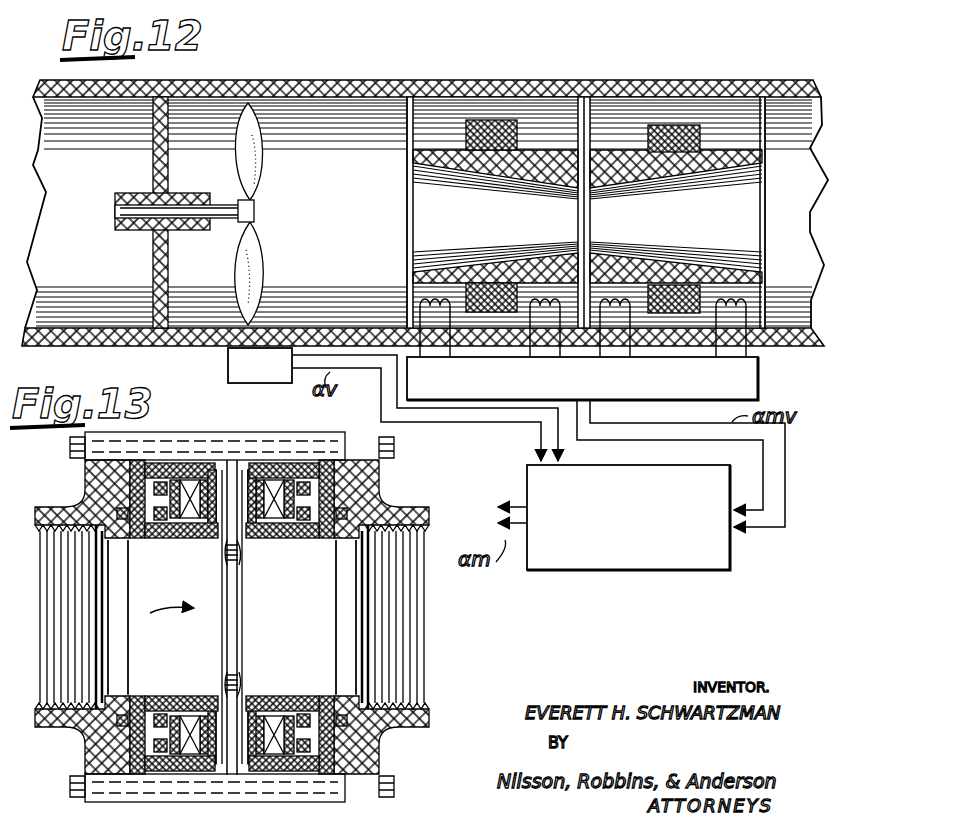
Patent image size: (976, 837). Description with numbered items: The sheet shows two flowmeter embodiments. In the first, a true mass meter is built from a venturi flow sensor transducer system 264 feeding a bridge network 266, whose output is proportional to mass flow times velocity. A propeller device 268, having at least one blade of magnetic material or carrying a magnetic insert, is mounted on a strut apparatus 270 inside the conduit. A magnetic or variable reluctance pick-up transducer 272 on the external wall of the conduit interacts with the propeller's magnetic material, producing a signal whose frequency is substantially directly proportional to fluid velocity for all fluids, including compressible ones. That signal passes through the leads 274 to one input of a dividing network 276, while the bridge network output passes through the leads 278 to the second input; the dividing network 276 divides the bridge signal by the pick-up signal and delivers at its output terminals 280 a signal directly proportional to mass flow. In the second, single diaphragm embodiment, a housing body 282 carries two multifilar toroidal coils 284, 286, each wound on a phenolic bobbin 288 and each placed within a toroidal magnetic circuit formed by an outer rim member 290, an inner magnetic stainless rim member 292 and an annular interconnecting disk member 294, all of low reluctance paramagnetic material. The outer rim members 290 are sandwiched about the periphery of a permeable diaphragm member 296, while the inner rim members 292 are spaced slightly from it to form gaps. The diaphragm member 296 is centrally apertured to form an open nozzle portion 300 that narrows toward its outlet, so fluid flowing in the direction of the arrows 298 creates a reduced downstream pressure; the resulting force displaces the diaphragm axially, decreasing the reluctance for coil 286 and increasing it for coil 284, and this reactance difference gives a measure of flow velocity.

In FIG. 12, the venturi flow sensor transducer system 264 is at (400, 215).
In FIG. 12, the bridge network 266 is at (766, 375).
In FIG. 12, the propeller device 268 is at (267, 160).
In FIG. 12, the strut apparatus 270 is at (153, 172).
In FIG. 12, the pick-up transducer 272 is at (228, 362).
In FIG. 12, the leads 274 is at (518, 426).
In FIG. 12, the dividing network 276 is at (638, 563).
In FIG. 12, the leads 278 is at (762, 535).
In FIG. 12, the output terminals 280 is at (514, 504).
In FIG. 13, the housing body 282 is at (292, 470).
In FIG. 13, the multifilar toroidal coil 284 is at (207, 476).
In FIG. 13, the multifilar toroidal coil 286 is at (258, 472).
In FIG. 13, the phenolic bobbin 288 is at (185, 697).
In FIG. 13, the outer rim member 290 is at (162, 462).
In FIG. 13, the inner rim member 292 is at (158, 540).
In FIG. 13, the annular interconnecting disk member 294 is at (112, 542).
In FIG. 13, the permeable diaphragm member 296 is at (241, 620).
In FIG. 13, the arrows 298 is at (172, 622).
In FIG. 13, the open nozzle portion 300 is at (239, 681).